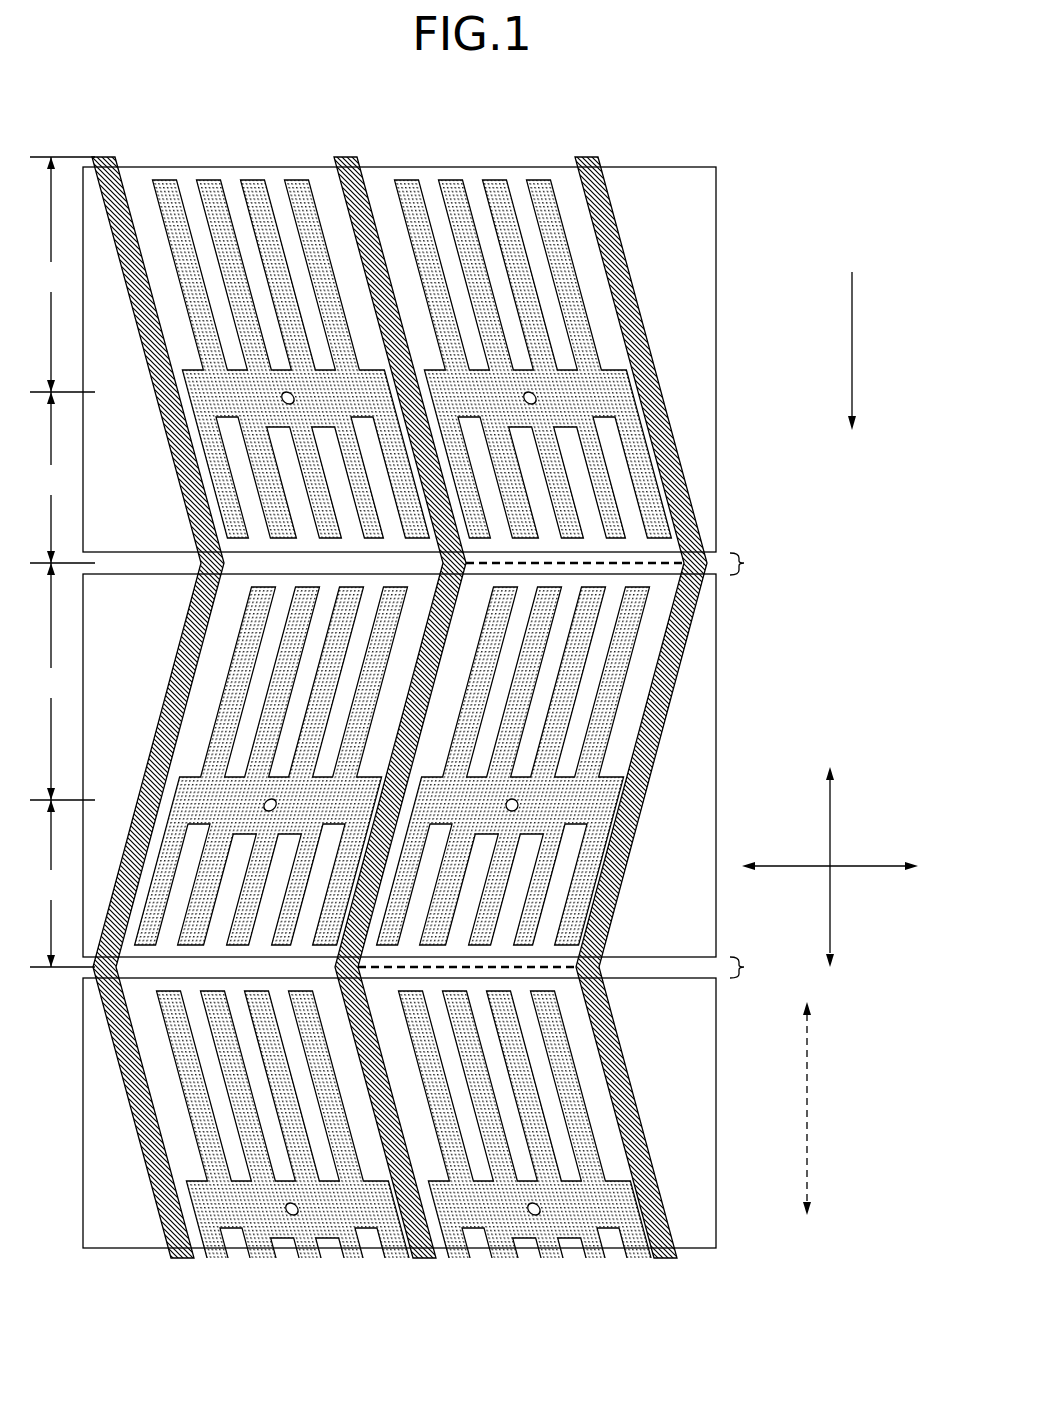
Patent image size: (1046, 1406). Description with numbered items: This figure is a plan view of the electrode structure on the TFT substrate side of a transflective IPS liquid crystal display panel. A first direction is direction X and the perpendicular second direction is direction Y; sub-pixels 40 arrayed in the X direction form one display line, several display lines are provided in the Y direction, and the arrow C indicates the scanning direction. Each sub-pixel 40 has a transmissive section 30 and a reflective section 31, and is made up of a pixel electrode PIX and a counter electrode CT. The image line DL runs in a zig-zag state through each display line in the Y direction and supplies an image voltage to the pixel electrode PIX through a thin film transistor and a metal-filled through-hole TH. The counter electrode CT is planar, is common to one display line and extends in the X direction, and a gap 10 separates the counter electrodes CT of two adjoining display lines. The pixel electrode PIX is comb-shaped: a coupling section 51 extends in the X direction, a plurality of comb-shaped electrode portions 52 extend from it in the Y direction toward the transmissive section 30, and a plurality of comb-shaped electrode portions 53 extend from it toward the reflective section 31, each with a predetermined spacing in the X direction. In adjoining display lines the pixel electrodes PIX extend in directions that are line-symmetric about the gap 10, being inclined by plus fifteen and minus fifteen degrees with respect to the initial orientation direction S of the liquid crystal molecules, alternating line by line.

The image line DL is at (115, 162).
The counter electrode CT is at (690, 242).
The pixel electrode PIX is at (462, 764).
The comb-shaped electrode portions 52 is at (575, 663).
The coupling section 51 is at (603, 788).
The comb-shaped electrode portions 53 is at (590, 843).
The through-hole TH is at (518, 811).
The sub-pixel 40 is at (565, 552).
The gap 10 is at (752, 766).
The transmissive section 30 is at (62, 478).
The reflective section 31 is at (62, 679).
The scanning direction arrow C is at (852, 366).
The direction X is at (852, 868).
The direction Y is at (831, 812).
The initial orientation direction S is at (807, 1077).